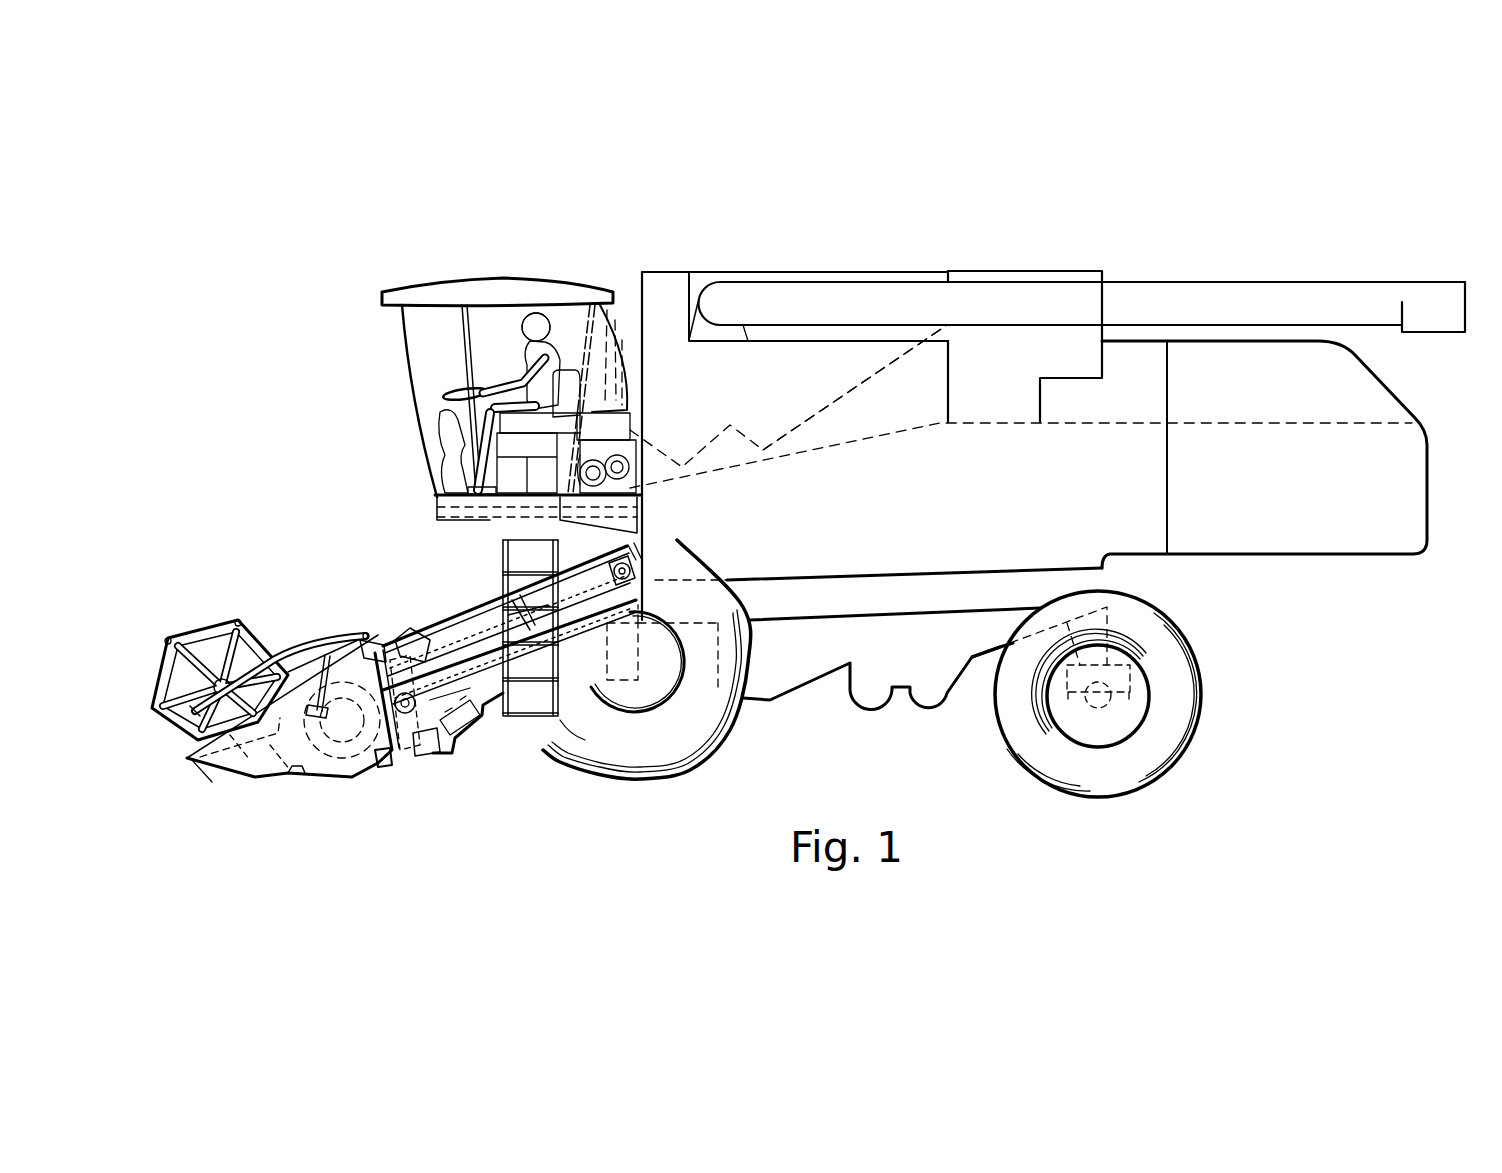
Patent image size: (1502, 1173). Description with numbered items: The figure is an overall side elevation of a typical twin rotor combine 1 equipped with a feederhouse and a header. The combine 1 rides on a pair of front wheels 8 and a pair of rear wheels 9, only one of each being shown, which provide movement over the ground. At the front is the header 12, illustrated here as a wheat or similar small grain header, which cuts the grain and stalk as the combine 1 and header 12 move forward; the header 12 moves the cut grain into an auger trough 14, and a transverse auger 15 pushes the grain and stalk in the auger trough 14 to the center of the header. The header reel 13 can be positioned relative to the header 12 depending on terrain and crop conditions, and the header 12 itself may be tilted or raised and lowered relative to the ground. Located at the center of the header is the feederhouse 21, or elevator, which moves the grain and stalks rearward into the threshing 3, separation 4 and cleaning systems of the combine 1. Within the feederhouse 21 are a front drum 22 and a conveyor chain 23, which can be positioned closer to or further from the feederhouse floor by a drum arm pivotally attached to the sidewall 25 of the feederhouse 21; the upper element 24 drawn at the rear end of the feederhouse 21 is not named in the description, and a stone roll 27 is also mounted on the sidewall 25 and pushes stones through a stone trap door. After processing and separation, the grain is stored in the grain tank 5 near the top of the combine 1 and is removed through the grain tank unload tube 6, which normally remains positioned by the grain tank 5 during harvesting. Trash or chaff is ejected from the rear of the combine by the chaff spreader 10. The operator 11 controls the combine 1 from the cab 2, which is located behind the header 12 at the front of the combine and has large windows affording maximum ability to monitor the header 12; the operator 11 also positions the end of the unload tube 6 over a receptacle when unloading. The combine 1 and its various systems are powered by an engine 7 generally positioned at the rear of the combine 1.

The combine 1 is at (872, 226).
The cab 2 is at (500, 278).
The threshing system 3 is at (825, 513).
The separation system 4 is at (938, 613).
The grain tank 5 is at (807, 373).
The grain tank unload tube 6 is at (1227, 293).
The engine 7 is at (1010, 337).
The front wheel 8 is at (710, 748).
The rear wheel 9 is at (1163, 735).
The chaff spreader 10 is at (1347, 548).
The operator 11 is at (527, 357).
The header 12 is at (264, 820).
The header reel 13 is at (233, 612).
The auger trough 14 is at (340, 773).
The transverse auger 15 is at (353, 693).
The feederhouse 21 is at (488, 738).
The front drum 22 is at (395, 640).
The conveyor chain 23 is at (430, 752).
The upper sprocket 24 is at (640, 565).
The sidewall 25 is at (657, 522).
The stone roll 27 is at (515, 600).